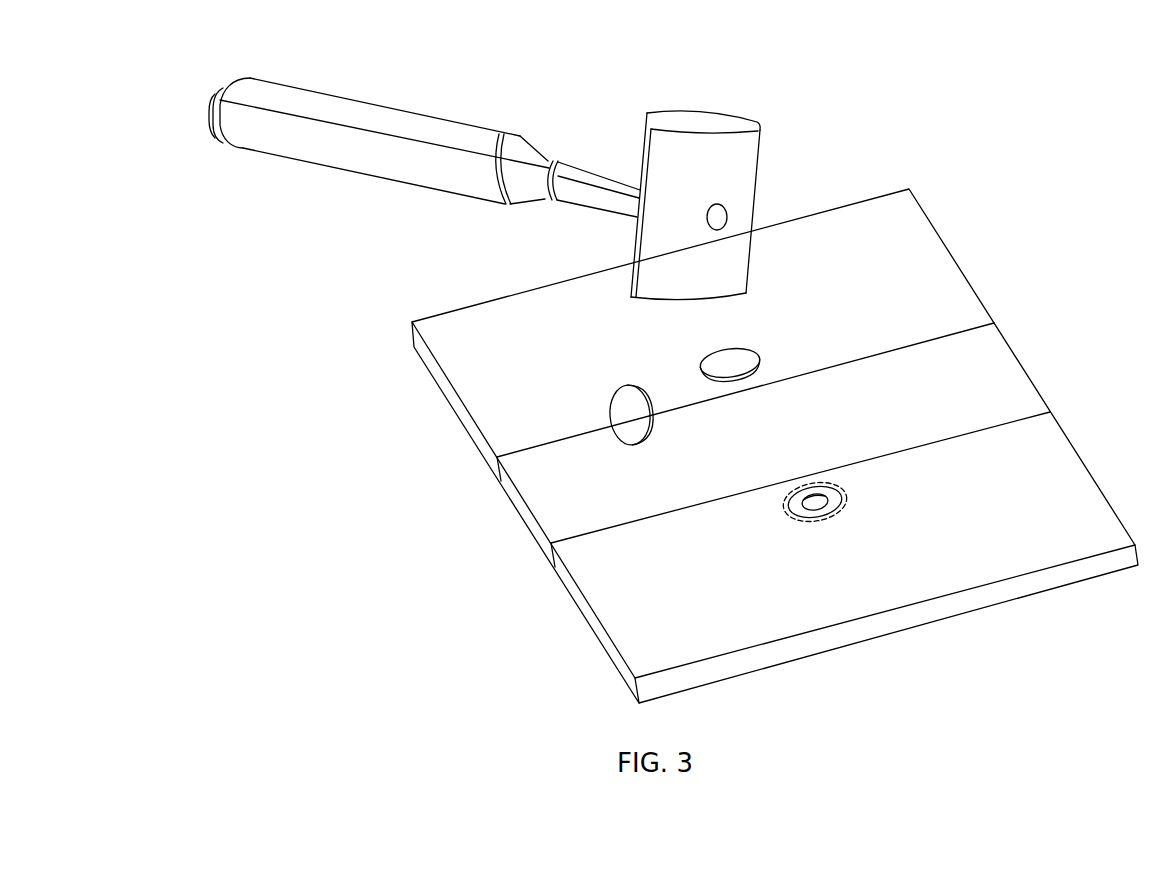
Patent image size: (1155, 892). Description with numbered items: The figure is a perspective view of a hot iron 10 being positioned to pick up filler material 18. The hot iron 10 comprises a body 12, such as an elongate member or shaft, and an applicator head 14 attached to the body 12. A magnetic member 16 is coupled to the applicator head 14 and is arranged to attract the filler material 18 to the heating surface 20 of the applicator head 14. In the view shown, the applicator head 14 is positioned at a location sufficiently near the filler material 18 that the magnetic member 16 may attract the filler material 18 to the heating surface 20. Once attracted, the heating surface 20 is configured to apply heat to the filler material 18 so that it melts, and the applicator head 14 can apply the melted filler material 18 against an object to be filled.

The hot iron 10 is at (659, 72).
The body 12 is at (590, 172).
The applicator head 14 is at (707, 122).
The magnetic member 16 is at (727, 210).
The filler material 18 is at (723, 363).
The heating surface 20 is at (733, 165).